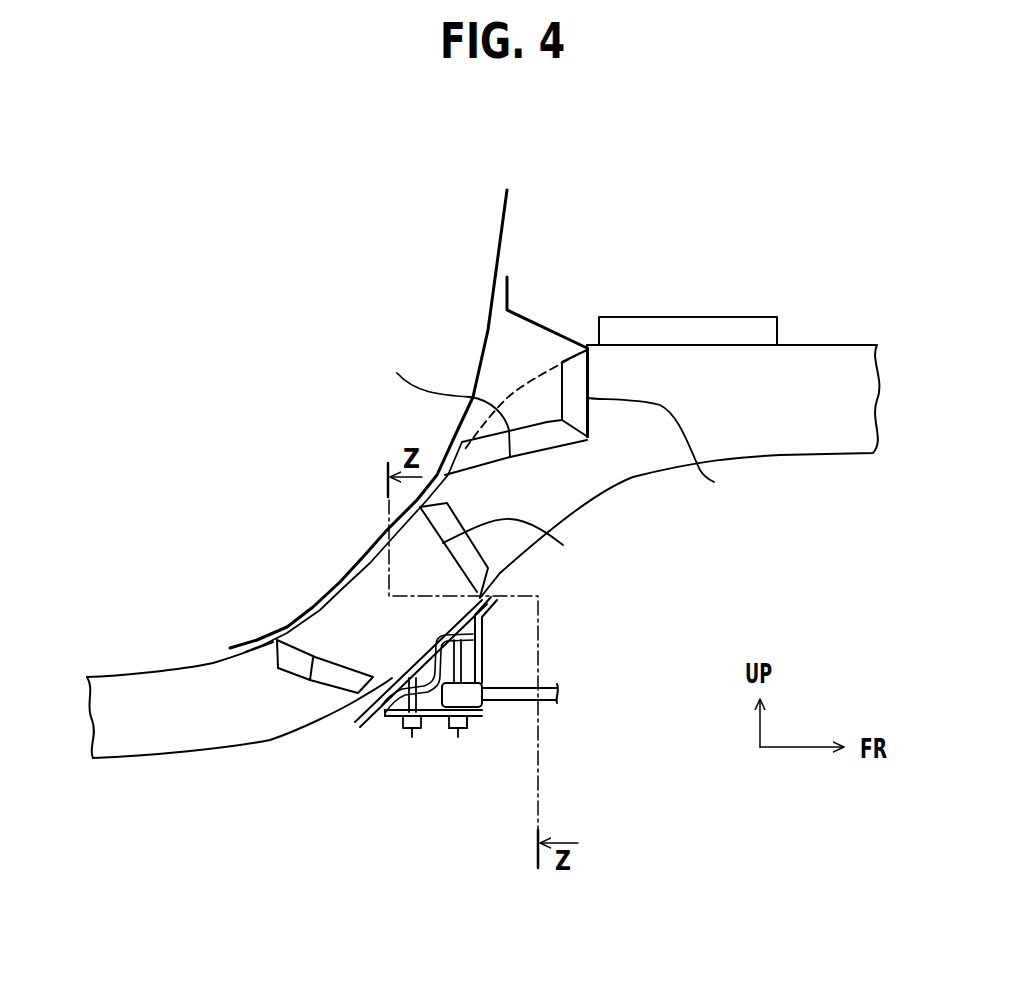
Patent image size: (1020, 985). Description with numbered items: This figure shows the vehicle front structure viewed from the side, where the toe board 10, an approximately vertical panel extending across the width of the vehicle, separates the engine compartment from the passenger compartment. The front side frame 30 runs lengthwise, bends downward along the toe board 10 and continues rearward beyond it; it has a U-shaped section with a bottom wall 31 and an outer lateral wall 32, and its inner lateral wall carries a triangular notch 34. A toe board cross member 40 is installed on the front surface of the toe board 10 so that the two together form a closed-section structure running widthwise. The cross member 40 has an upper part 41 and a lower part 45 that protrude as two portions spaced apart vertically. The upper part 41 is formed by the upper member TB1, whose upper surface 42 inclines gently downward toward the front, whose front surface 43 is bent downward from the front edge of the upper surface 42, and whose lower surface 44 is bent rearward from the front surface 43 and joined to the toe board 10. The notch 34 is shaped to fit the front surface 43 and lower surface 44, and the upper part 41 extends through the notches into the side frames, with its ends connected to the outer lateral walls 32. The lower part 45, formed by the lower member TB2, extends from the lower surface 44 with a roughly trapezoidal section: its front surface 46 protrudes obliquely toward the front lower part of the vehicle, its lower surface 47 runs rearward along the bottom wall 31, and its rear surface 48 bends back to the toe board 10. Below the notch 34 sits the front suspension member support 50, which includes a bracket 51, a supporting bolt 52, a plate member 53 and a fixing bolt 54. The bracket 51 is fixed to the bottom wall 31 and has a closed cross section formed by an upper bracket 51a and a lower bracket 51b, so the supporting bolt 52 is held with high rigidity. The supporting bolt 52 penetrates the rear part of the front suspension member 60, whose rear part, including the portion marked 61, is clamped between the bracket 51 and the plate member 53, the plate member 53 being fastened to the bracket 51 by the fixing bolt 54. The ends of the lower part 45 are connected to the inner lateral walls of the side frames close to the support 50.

The toe board 10 is at (507, 205).
The front side frame 30 is at (833, 343).
The bottom wall 31 is at (530, 550).
The outer lateral wall 32 is at (787, 377).
The notch 34 is at (442, 399).
The toe board cross member 40 is at (534, 318).
The upper part for making a closed cross section 41 is at (592, 439).
The upper surface 42 is at (556, 342).
The front surface 43 is at (664, 448).
The lower surface 44 is at (543, 452).
The lower part for making a closed cross section 45 is at (478, 578).
The front surface 46 is at (515, 543).
The lower surface 47 is at (487, 627).
The rear surface 48 is at (320, 673).
The front suspension member support 50 is at (488, 654).
The bracket 51 is at (482, 808).
The upper bracket 51a is at (412, 714).
The lower bracket 51b is at (437, 708).
The supporting bolt 52 is at (472, 720).
The plate member 53 is at (380, 725).
The fixing bolt 54 is at (386, 716).
The front suspension member 60 is at (548, 712).
The rod body 61 is at (515, 693).
The upper member for forming a closed cross section TB1 is at (502, 360).
The lower member for forming a closed cross section TB2 is at (358, 598).